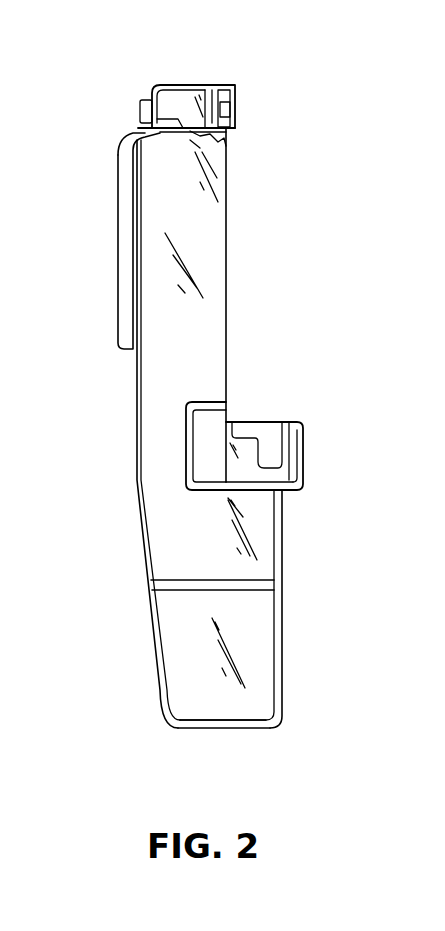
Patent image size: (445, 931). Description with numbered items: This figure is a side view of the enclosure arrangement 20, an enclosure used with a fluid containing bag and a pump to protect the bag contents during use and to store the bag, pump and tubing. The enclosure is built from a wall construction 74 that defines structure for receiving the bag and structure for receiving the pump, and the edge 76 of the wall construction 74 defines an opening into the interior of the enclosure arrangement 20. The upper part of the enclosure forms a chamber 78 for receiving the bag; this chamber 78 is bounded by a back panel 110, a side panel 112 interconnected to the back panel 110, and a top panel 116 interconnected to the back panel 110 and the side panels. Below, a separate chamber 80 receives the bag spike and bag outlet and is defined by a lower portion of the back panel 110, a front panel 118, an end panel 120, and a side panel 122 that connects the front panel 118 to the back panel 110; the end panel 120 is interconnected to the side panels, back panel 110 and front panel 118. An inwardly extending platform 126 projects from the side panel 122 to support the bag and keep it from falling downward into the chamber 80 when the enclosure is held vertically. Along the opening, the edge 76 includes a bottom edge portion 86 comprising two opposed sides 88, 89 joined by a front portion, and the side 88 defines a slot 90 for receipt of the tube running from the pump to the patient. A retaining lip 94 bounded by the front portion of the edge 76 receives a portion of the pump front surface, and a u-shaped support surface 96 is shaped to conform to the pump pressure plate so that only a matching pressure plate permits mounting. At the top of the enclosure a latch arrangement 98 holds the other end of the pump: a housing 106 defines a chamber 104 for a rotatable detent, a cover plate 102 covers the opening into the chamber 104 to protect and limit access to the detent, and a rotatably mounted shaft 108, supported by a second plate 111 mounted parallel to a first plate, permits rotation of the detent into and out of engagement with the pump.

The enclosure arrangement 20 is at (305, 226).
The housing 106 is at (160, 90).
The chamber 104 is at (192, 92).
The cover plate 102 is at (237, 96).
The latch arrangement 98 is at (138, 106).
The second plate 111 is at (138, 127).
The top panel 116 is at (222, 140).
The shaft 108 is at (123, 152).
The chamber 78 is at (168, 356).
The back panel 110 is at (134, 450).
The edge 76 is at (228, 307).
The side panel 112 is at (190, 324).
The bottom edge portion 86 is at (293, 421).
The side 89 is at (248, 418).
The retaining lip 94 is at (306, 428).
The side 88 is at (283, 447).
The slot 90 is at (298, 483).
The u-shaped support surface 96 is at (303, 488).
The wall construction 74 is at (283, 542).
The platform 126 is at (175, 578).
The side panel 122 is at (262, 622).
The front panel 118 is at (283, 637).
The chamber 80 is at (192, 680).
The end panel 120 is at (247, 730).